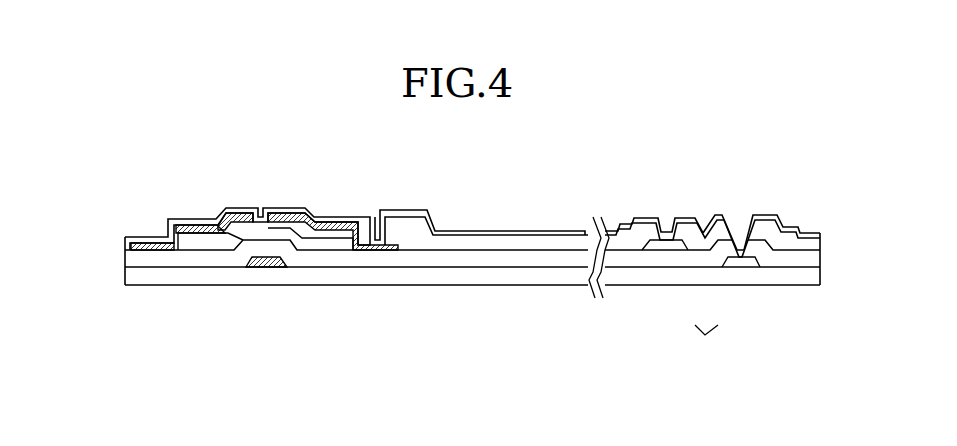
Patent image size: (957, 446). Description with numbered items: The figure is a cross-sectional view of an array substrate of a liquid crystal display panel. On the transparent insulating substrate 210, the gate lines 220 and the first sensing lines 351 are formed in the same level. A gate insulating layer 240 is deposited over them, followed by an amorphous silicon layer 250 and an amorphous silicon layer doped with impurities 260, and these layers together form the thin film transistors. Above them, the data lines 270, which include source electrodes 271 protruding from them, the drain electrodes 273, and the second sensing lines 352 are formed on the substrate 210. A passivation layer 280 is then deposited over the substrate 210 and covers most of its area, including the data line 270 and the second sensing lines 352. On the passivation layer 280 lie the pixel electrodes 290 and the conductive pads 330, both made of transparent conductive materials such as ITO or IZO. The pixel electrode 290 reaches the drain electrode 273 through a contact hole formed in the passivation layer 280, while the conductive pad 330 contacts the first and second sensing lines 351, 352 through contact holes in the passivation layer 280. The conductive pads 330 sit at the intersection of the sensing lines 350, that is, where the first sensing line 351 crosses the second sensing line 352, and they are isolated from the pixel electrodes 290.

The transparent insulating substrate 210 is at (412, 276).
The gate line 220 is at (263, 268).
The gate insulating layer 240 is at (132, 262).
The amorphous silicon layer 250 is at (207, 242).
The amorphous silicon layer doped with impurities 260 is at (190, 233).
The data line 270 is at (147, 245).
The source electrode 271 is at (246, 213).
The drain electrode 273 is at (322, 222).
The passivation layer 280 is at (210, 219).
The pixel electrode 290 is at (512, 231).
The conductive pad 330 is at (766, 215).
The sensing lines 350 is at (706, 343).
The first sensing line 351 is at (740, 262).
The second sensing line 352 is at (668, 252).